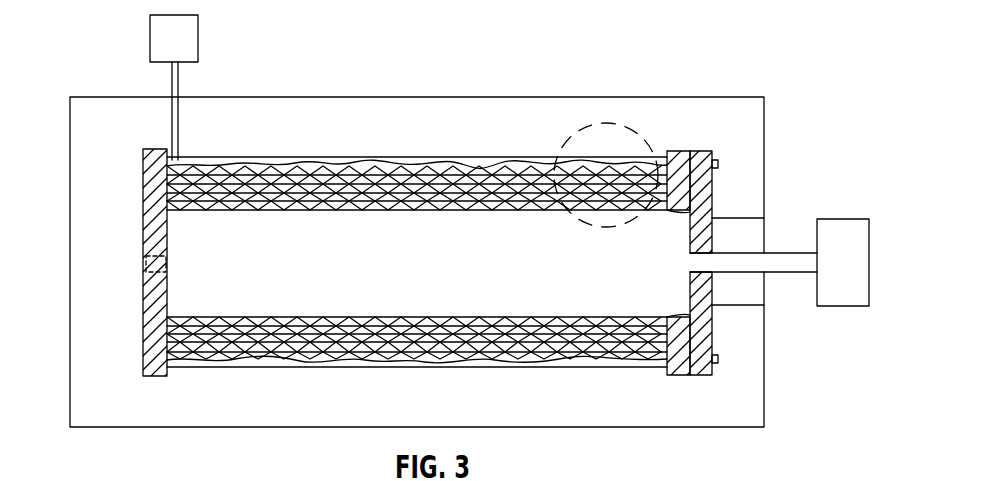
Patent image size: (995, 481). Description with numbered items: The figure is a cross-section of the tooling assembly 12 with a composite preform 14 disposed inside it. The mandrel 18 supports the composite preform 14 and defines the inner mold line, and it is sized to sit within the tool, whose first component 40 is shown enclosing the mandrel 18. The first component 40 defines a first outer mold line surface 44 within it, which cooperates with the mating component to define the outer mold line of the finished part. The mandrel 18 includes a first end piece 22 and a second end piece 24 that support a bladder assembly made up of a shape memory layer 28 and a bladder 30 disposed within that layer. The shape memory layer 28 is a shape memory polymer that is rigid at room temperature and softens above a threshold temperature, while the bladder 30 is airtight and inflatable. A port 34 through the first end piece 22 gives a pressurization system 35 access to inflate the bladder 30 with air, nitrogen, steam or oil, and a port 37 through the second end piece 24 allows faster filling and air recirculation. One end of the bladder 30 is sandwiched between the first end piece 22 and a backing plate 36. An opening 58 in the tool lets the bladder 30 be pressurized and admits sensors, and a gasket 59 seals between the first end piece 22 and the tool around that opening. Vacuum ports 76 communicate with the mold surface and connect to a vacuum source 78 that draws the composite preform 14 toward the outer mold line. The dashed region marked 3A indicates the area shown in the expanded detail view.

The tooling assembly 12 is at (747, 66).
The composite preform 14 is at (503, 168).
The mandrel 18 is at (718, 138).
The first end piece 22 is at (712, 208).
The second end piece 24 is at (143, 216).
The shape memory layer 28 is at (380, 183).
The bladder 30 is at (343, 180).
The port 34 is at (700, 260).
The pressurization system 35 is at (845, 219).
The backing plate 36 is at (688, 151).
The port 37 is at (146, 266).
The first component 40 is at (432, 112).
The first outer mold line surface 44 is at (475, 160).
The opening 58 is at (740, 304).
The gasket 59 is at (720, 165).
The vacuum port 76 is at (182, 110).
The vacuum source 78 is at (208, 38).
The detail region 3A is at (603, 123).